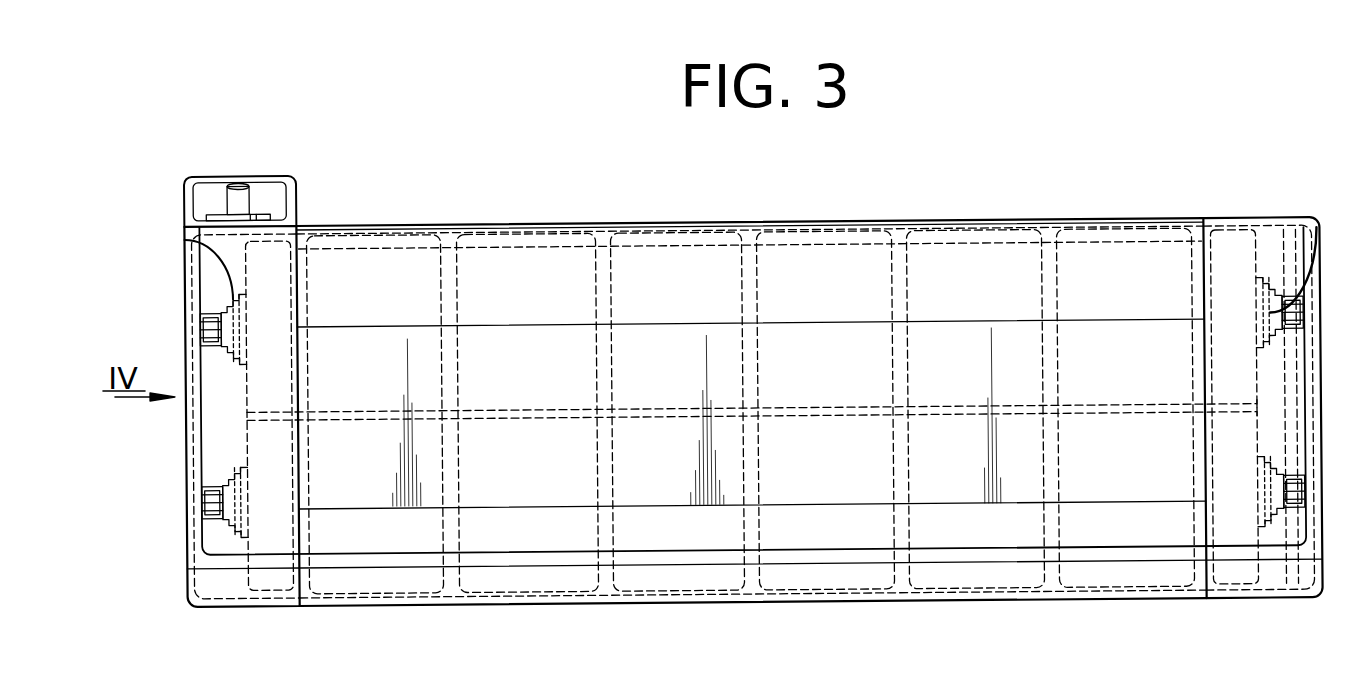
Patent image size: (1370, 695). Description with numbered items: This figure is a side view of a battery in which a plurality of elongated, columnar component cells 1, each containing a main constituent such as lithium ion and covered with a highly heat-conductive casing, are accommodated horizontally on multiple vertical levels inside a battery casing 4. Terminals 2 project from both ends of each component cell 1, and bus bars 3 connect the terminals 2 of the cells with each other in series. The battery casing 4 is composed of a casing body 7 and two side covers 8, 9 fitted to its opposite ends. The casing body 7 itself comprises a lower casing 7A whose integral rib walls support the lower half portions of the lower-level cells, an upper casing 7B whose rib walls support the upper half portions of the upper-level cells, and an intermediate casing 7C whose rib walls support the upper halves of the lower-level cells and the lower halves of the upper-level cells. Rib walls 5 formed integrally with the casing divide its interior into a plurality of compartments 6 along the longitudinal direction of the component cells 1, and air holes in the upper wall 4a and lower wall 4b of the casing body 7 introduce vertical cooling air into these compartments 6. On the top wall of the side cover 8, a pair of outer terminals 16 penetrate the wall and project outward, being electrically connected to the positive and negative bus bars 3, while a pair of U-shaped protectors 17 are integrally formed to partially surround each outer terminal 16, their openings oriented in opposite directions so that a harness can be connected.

The component cell 1 is at (359, 240).
The terminals 2 is at (204, 337).
The bus bars 3 is at (1295, 385).
The battery casing 4 is at (1195, 217).
The upper wall 4a is at (1108, 219).
The lower wall 4b is at (1140, 604).
The rib walls 5 is at (310, 344).
The compartments 6 is at (222, 547).
The casing body 7 is at (963, 220).
The lower casing 7A is at (517, 596).
The upper casing 7B is at (537, 244).
The intermediate casing 7C is at (548, 331).
The side cover 8 is at (186, 292).
The side cover 9 is at (1322, 251).
The outer terminals 16 is at (243, 180).
The protectors 17 is at (299, 188).